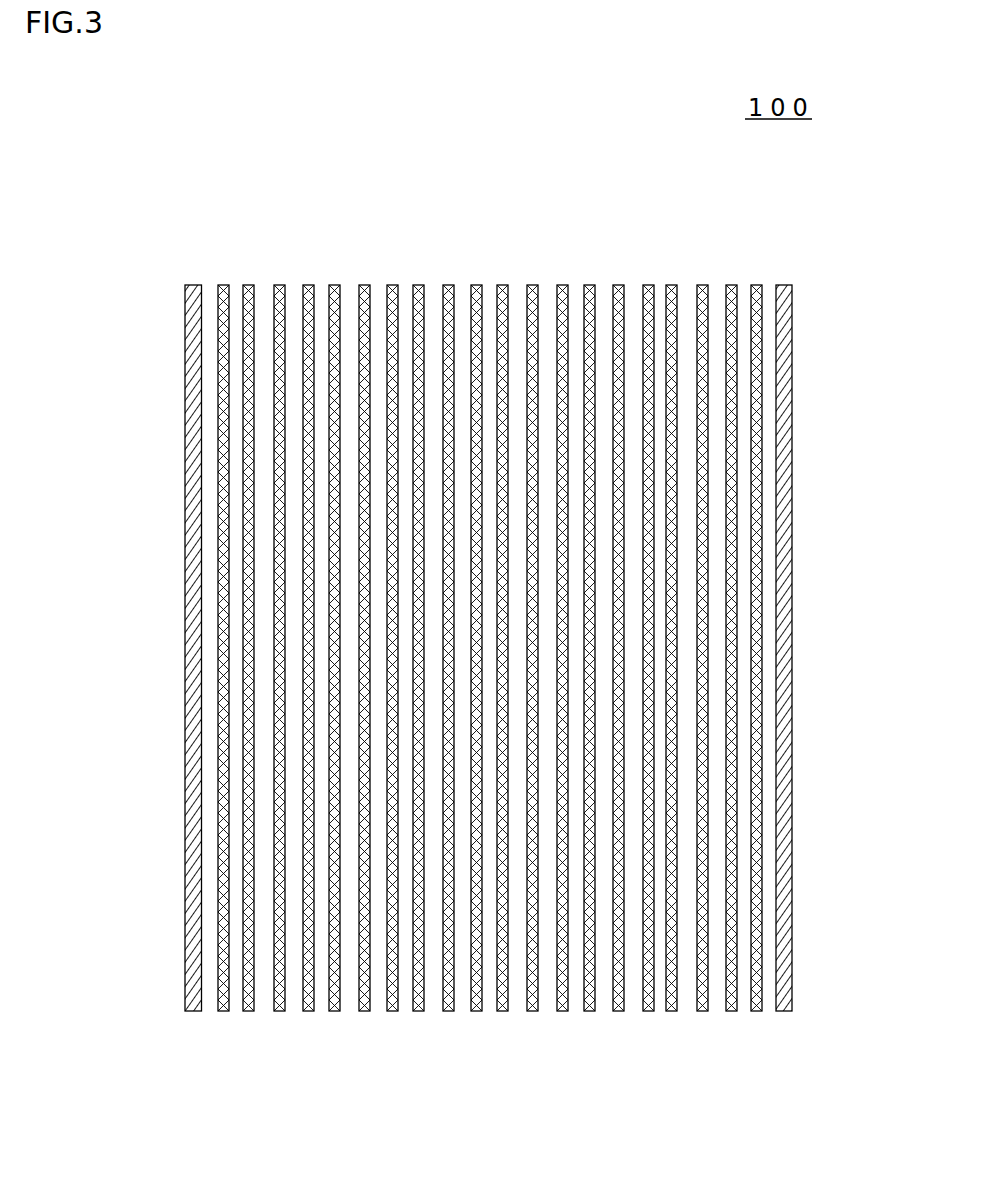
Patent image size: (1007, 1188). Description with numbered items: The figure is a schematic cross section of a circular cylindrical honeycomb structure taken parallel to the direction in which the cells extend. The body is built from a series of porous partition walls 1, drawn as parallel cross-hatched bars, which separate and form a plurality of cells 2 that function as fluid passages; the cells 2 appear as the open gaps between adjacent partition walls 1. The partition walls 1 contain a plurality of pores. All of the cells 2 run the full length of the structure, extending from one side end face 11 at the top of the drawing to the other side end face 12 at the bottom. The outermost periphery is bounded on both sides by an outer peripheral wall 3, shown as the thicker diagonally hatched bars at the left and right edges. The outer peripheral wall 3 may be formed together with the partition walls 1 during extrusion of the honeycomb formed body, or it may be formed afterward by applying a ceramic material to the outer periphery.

The partition wall 1 is at (735, 357).
The cell 2 is at (659, 307).
The outer peripheral wall 3 is at (190, 535).
The one side end face 11 is at (186, 257).
The the other side end face 12 is at (189, 1032).